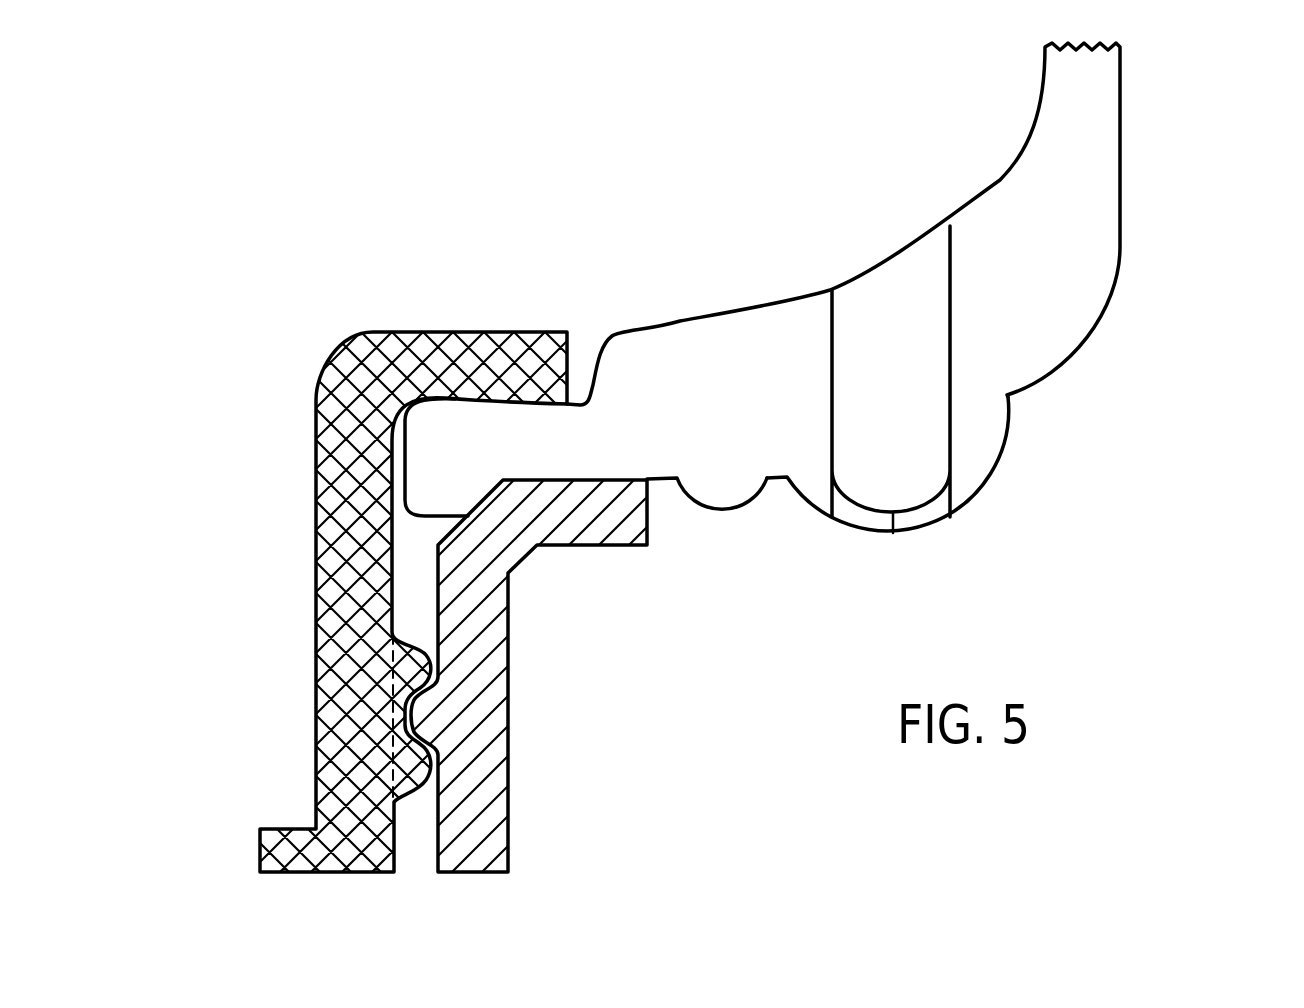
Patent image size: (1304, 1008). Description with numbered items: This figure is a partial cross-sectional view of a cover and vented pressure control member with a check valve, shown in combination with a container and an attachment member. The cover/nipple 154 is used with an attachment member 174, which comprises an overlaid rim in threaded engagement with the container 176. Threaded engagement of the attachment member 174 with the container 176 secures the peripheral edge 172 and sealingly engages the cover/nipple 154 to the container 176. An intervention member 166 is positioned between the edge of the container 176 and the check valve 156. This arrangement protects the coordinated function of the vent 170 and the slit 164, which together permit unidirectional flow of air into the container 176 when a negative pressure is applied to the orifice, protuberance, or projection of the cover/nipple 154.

The cover/nipple 154 is at (1178, 206).
The check valve 156 is at (1000, 472).
The slit 164 is at (888, 521).
The intervention member 166 is at (725, 507).
The vent 170 is at (898, 283).
The peripheral edge 172 is at (437, 427).
The attachment member 174 is at (314, 572).
The container 176 is at (508, 694).